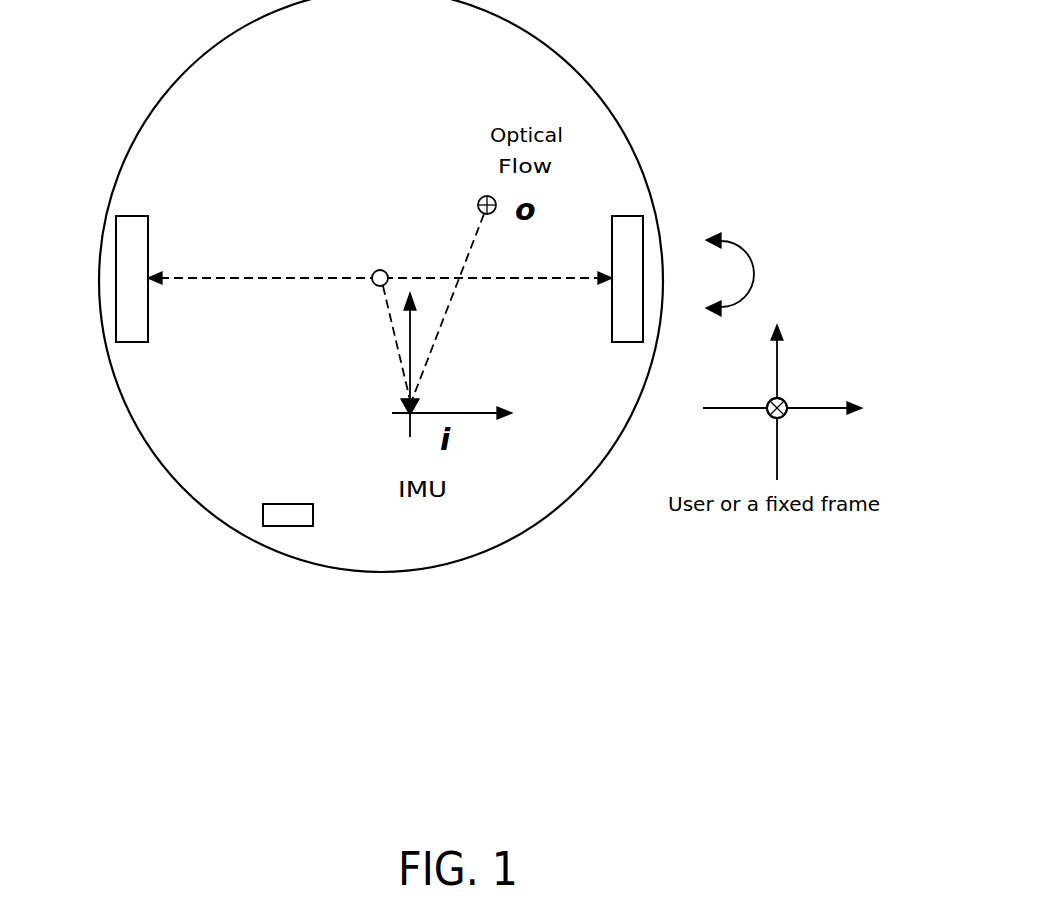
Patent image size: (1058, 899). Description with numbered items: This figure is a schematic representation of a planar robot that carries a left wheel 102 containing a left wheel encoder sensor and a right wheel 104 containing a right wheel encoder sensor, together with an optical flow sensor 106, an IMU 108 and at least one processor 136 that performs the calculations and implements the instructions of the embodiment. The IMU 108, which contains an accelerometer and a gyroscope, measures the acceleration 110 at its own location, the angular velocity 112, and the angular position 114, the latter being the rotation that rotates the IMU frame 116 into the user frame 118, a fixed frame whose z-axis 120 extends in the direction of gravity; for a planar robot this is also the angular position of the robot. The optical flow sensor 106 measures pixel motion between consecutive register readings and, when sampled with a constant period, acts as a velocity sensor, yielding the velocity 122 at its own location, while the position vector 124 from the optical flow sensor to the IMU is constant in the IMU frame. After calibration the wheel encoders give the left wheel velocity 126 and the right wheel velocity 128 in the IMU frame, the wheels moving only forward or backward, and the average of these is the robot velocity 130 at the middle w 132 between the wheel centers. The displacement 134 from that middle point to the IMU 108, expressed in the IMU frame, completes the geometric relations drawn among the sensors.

The left wheel 102 is at (116, 245).
The right wheel 104 is at (635, 216).
The optical flow sensor 106 is at (486, 214).
The IMU 108 is at (395, 413).
The acceleration 110 is at (370, 462).
The angular velocity 112 is at (690, 260).
The angular position 114 is at (737, 348).
The IMU frame 116 is at (478, 423).
The user frame 118 is at (838, 408).
The z-axis 120 is at (786, 403).
The velocity 122 is at (457, 163).
The position vector from optical flow sensor to IMU 124 is at (507, 308).
The left wheel velocity 126 is at (196, 203).
The right wheel velocity 128 is at (582, 378).
The robot velocity 130 is at (382, 205).
The middle w 132 is at (334, 294).
The displacement 134 is at (337, 340).
The processor 136 is at (280, 527).